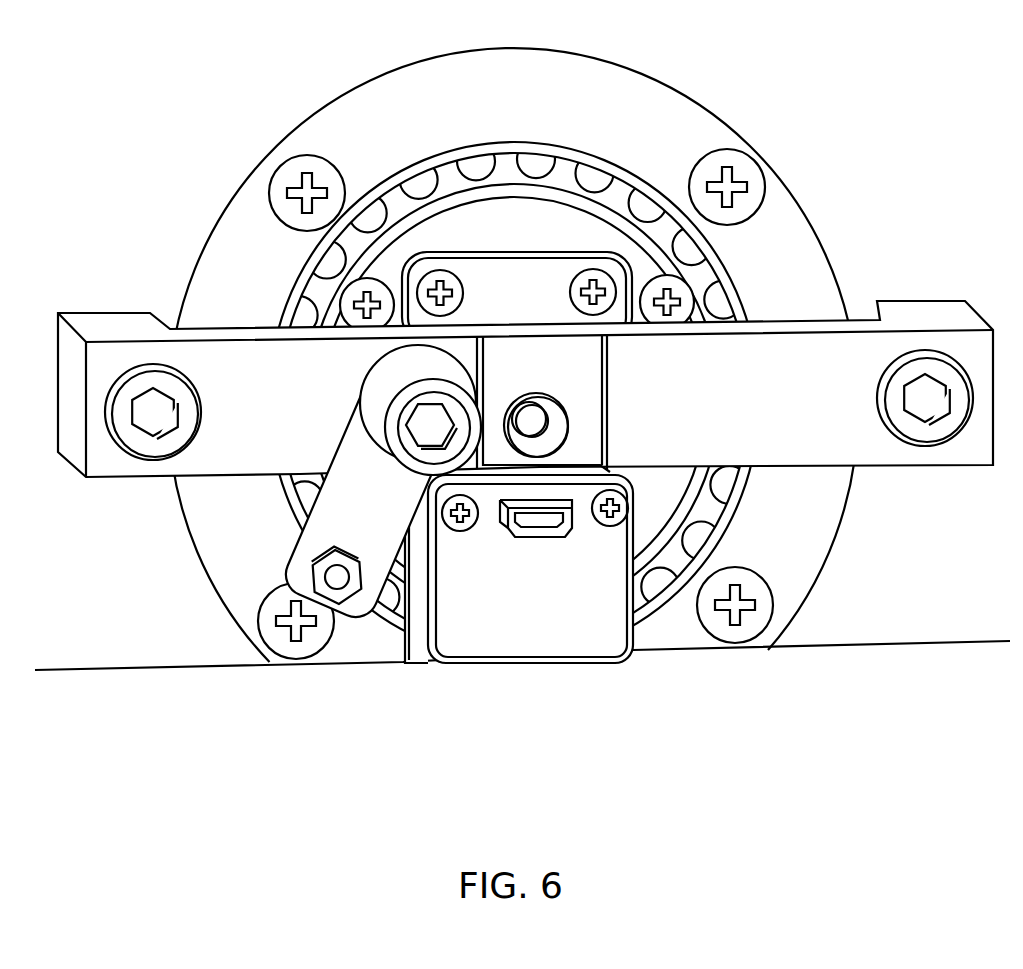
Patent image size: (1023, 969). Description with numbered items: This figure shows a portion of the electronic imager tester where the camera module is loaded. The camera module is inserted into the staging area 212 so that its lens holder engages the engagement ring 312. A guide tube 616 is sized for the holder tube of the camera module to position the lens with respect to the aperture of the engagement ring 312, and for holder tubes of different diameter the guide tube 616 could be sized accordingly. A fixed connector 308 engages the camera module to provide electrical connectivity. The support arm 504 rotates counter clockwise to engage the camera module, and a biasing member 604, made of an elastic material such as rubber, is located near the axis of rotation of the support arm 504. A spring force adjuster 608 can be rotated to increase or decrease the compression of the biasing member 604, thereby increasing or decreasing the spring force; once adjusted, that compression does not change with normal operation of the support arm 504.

The staging area 212 is at (632, 443).
The connector 308 is at (540, 556).
The engagement ring 312 is at (543, 403).
The support arm 504 is at (390, 520).
The biasing member 604 is at (387, 381).
The spring force adjuster 608 is at (422, 425).
The guide tube 616 is at (563, 447).